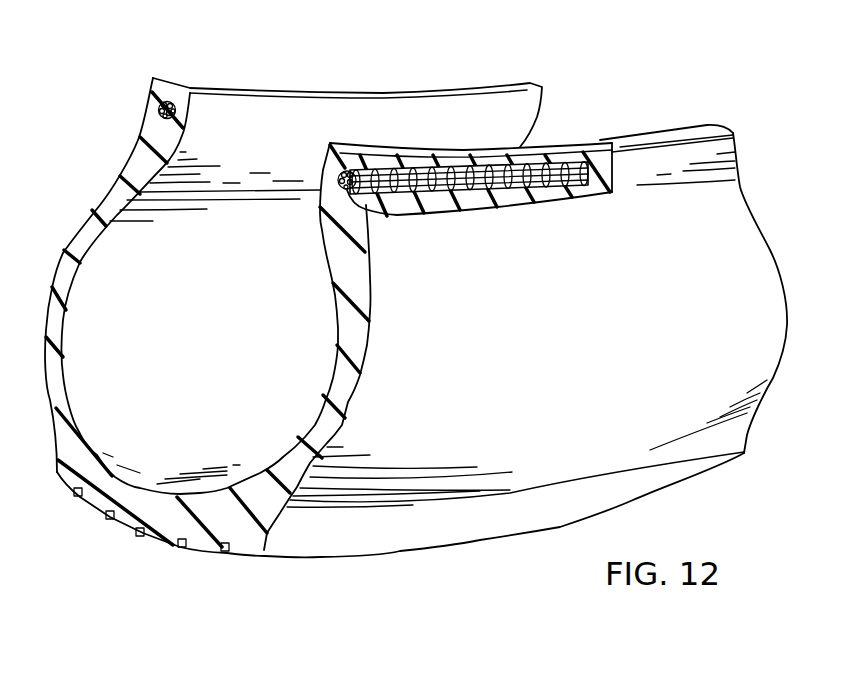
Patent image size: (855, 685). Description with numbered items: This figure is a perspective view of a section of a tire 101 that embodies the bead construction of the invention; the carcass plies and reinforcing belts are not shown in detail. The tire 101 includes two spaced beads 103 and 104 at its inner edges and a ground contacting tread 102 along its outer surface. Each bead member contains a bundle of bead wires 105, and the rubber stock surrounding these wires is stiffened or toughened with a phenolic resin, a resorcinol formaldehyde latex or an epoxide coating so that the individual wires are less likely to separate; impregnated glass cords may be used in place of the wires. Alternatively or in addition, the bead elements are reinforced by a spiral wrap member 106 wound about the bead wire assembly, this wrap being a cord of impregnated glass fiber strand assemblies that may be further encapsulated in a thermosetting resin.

The tire 101 is at (620, 363).
The ground contacting tread 102 is at (127, 527).
The bead 103 is at (170, 75).
The bead 104 is at (354, 135).
The bundle of bead wires 105 is at (338, 176).
The spiral wrap member 106 is at (474, 165).